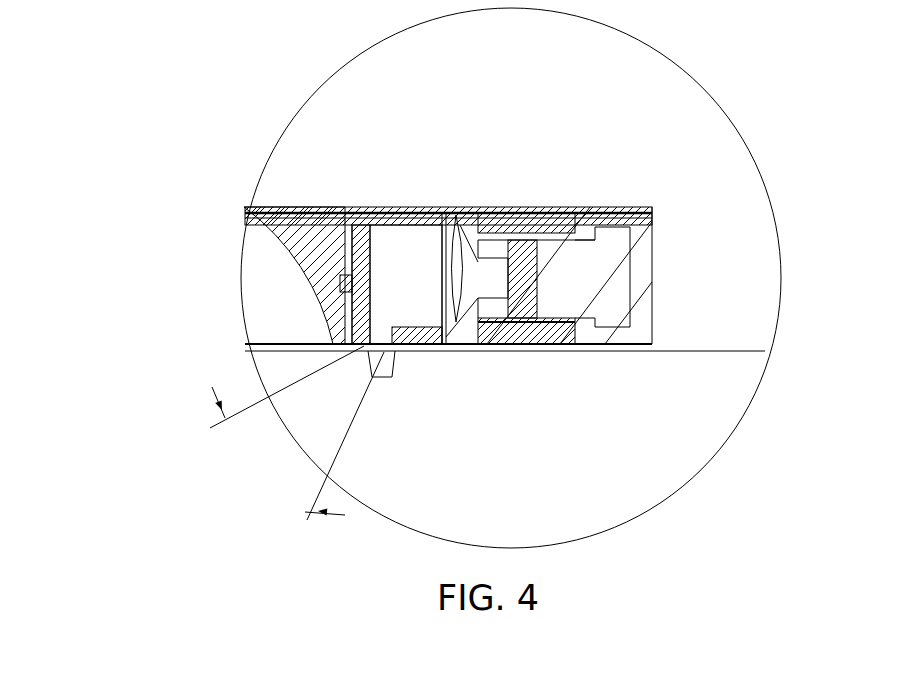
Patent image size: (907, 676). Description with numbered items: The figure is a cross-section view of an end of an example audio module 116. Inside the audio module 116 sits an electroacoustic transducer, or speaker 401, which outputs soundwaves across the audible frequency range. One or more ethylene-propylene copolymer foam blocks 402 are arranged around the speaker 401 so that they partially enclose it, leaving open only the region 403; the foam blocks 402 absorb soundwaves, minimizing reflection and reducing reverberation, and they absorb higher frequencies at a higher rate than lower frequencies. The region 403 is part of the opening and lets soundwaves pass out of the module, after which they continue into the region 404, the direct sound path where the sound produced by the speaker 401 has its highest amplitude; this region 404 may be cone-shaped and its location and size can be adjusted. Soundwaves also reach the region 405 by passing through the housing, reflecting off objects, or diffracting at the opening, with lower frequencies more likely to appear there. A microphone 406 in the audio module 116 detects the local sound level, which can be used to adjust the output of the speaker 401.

The audio module 116 is at (751, 160).
The electroacoustic transducer 401 is at (500, 254).
The EPOM foam blocks 402 is at (413, 310).
The region 403 is at (382, 377).
The region 404 is at (307, 400).
The region 405 is at (591, 414).
The microphone 406 is at (355, 288).